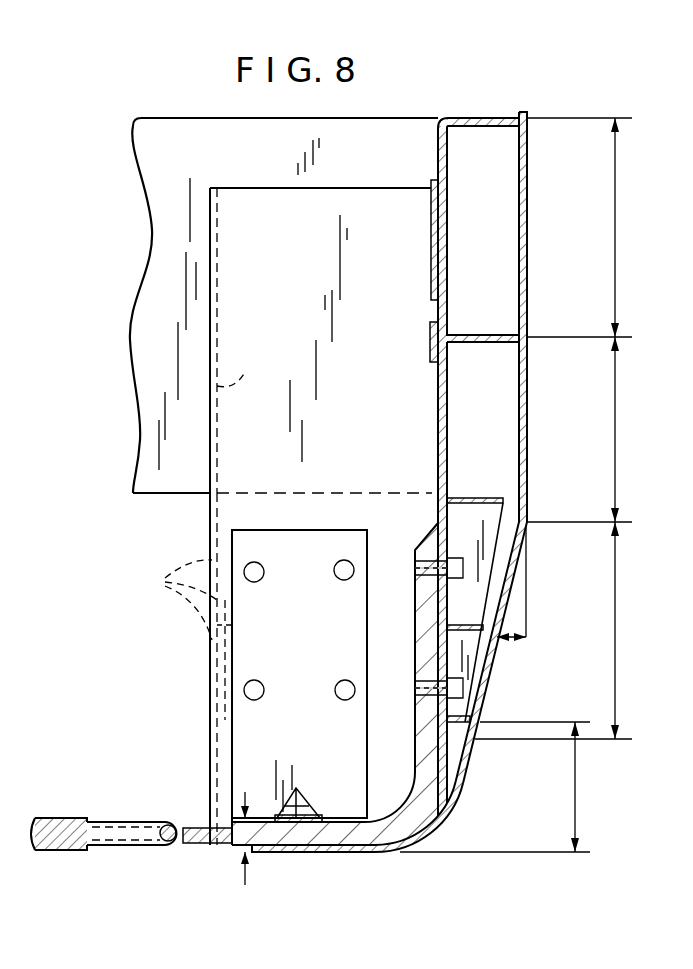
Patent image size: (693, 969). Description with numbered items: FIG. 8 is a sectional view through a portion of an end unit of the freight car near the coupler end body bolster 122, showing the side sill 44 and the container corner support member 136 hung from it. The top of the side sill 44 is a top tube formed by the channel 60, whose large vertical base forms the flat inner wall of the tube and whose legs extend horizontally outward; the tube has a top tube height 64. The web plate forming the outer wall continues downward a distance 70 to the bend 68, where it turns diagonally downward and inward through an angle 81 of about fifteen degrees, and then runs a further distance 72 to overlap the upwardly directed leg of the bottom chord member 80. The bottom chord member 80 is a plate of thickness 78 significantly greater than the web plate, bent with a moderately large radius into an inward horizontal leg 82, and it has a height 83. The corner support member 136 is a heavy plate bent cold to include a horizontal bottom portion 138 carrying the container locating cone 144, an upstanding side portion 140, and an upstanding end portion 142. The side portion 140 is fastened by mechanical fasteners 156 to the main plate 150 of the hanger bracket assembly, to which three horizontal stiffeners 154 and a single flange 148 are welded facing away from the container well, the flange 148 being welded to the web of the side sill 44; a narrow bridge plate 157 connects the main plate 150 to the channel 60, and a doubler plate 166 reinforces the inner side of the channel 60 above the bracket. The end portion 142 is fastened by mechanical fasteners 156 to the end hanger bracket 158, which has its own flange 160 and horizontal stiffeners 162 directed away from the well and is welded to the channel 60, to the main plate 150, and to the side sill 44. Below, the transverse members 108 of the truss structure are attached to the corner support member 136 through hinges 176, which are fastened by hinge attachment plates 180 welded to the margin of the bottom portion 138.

The side sill 44 is at (532, 108).
The channel 60 is at (438, 160).
The top tube height 64 is at (615, 240).
The distance 70 is at (615, 432).
The distance 72 is at (615, 632).
The bend 68 is at (525, 522).
The angle 81 is at (517, 640).
The height 83 is at (575, 790).
The thickness 78 is at (470, 776).
The bottom chord member 80 is at (455, 812).
The horizontal leg 82 is at (290, 852).
The coupler end body bolster 122 is at (262, 162).
The end hanger bracket 158 is at (315, 261).
The flange 160 is at (246, 362).
The horizontal stiffeners 162 is at (182, 640).
The doubler plate 166 is at (431, 236).
The bridge plate 157 is at (430, 348).
The main plate 150 is at (438, 432).
The horizontal stiffeners 154 is at (476, 498).
The end portion 142 is at (325, 546).
The side portion 140 is at (432, 523).
The flange 148 is at (497, 538).
The mechanical fasteners 156 is at (334, 574).
The container corner support member 136 is at (233, 745).
The container locating cone 144 is at (290, 806).
The horizontal bottom portion 138 is at (337, 815).
The transverse members 108 is at (55, 818).
The hinges 176 is at (112, 822).
The hinge attachment plates 180 is at (200, 843).